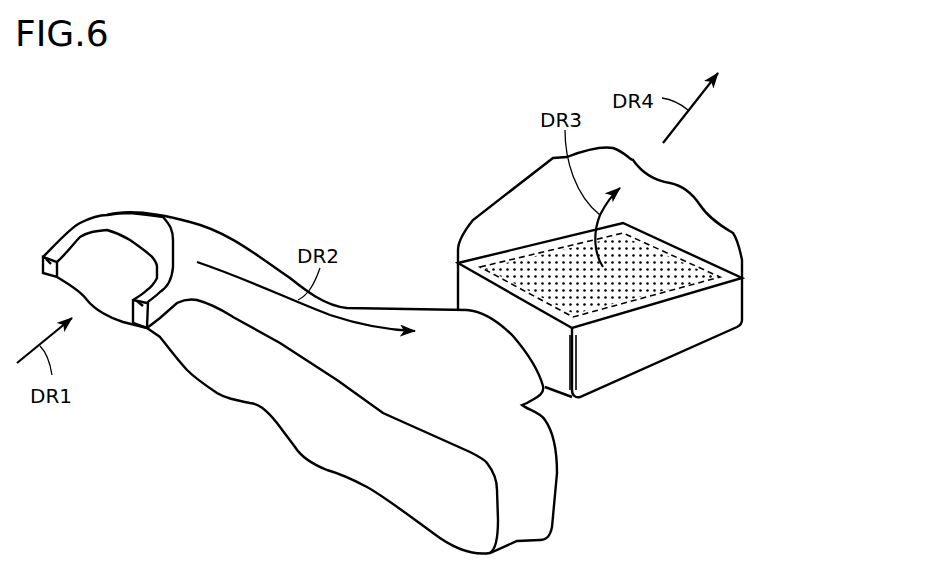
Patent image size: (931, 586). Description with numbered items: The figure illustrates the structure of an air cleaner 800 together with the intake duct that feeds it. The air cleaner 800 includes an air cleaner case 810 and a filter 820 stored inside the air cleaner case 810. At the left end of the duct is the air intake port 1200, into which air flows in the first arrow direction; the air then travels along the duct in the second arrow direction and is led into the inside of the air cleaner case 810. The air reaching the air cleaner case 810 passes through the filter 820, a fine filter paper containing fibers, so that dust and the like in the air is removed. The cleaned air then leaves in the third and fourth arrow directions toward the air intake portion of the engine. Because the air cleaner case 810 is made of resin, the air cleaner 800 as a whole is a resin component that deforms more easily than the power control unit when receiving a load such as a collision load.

The air intake port 1200 is at (123, 267).
The air cleaner 800 is at (667, 280).
The air cleaner case 810 is at (662, 338).
The filter 820 is at (640, 278).